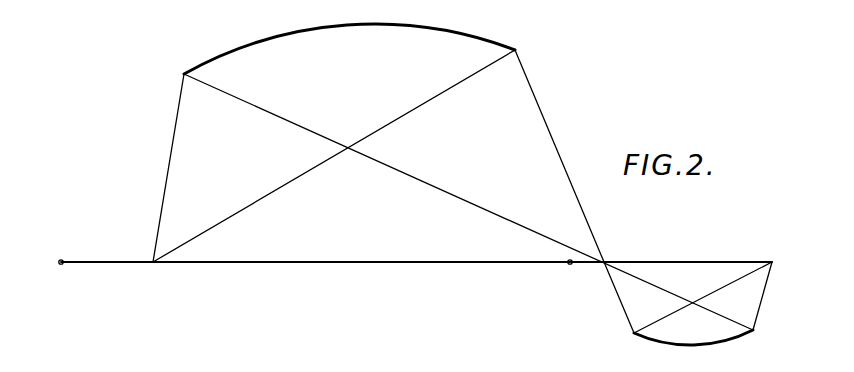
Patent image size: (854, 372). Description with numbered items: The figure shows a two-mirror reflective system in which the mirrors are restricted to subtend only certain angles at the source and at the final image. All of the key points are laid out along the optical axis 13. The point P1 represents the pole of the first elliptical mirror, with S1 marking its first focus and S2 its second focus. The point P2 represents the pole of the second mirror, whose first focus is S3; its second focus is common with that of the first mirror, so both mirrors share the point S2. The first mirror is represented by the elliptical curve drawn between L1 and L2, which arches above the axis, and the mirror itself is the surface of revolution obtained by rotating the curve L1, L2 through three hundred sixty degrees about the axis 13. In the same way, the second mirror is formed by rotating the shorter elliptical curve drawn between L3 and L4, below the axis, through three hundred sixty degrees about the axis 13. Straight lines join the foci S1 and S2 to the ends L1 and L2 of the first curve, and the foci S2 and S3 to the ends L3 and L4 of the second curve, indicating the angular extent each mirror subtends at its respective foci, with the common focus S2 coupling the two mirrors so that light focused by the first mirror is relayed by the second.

The optical axis 13 is at (329, 263).
The pole of the first elliptical mirror P1 is at (72, 283).
The pole of the second mirror P2 is at (574, 283).
The first focus of the first elliptical mirror S1 is at (330, 178).
The second focus of the first mirror S2 is at (619, 285).
The first focus of the second mirror S3 is at (703, 284).
The end point of the first elliptical curve L1 is at (453, 177).
The end point of the first elliptical curve L2 is at (559, 150).
The end point of the second elliptical curve L3 is at (751, 349).
The end point of the second elliptical curve L4 is at (679, 349).